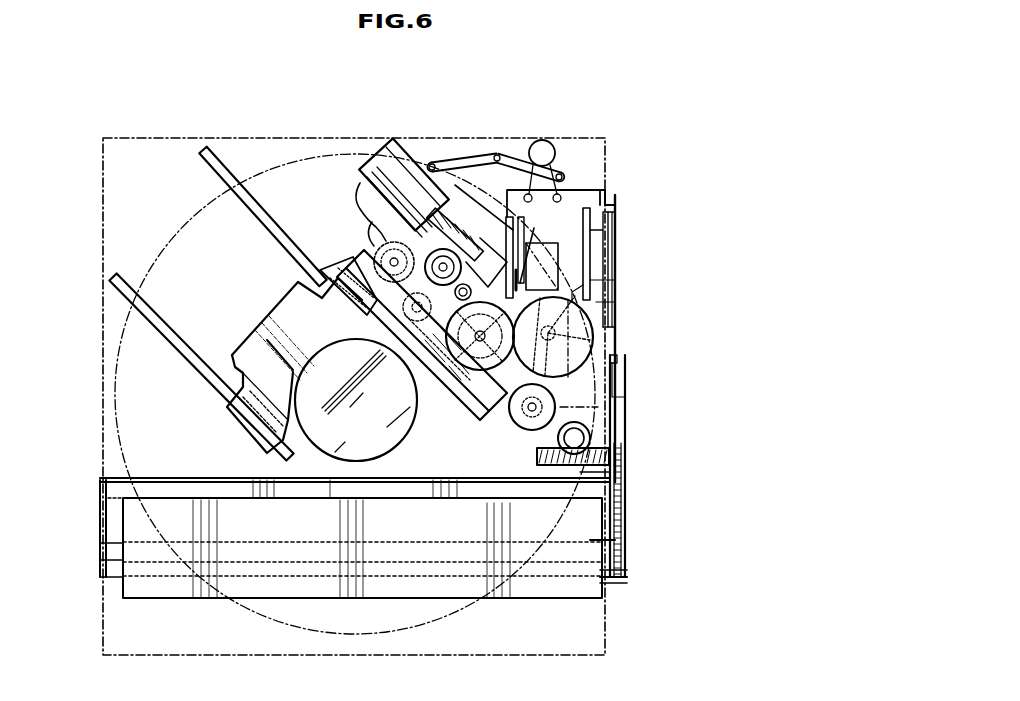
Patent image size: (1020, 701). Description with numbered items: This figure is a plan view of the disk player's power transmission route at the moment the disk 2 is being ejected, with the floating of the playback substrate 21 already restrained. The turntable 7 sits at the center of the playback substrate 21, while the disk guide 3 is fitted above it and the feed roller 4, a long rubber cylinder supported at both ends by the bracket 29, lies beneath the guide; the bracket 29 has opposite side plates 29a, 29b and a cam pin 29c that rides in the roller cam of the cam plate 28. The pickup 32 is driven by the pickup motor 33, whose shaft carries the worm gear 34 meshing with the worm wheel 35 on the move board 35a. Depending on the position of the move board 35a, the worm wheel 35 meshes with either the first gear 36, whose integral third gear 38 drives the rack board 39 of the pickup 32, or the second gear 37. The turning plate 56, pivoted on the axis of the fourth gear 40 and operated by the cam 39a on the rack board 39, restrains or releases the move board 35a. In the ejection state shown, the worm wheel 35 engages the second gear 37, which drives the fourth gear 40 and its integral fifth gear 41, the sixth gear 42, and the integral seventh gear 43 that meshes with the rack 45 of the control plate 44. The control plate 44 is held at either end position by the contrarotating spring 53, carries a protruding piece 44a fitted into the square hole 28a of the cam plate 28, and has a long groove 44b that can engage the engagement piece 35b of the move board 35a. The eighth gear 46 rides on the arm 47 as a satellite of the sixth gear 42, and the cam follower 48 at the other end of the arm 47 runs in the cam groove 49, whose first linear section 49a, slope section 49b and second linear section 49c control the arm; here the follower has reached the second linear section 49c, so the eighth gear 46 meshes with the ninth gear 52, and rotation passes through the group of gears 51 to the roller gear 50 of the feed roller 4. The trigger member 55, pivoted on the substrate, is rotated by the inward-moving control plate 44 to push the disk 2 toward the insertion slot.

The disk 2 is at (470, 606).
The disk guide 3 is at (574, 598).
The feed roller 4 is at (410, 542).
The turntable 7 is at (342, 487).
The playback substrate 21 is at (147, 658).
The cam plate 28 is at (626, 207).
The square hole 28a is at (615, 235).
The bracket 29 is at (628, 581).
The side plate 29a is at (627, 562).
The side plate 29b is at (100, 520).
The cam pin 29c is at (626, 358).
The pickup 32 is at (234, 426).
The pickup motor 33 is at (389, 140).
The worm gear 34 is at (462, 199).
The worm wheel 35 is at (448, 236).
The move board 35a is at (374, 201).
The engagement piece 35b is at (534, 240).
The first gear 36 is at (367, 226).
The second gear 37 is at (470, 288).
The third gear 38 is at (376, 249).
The rack board 39 is at (370, 274).
The cam 39a is at (342, 307).
The fourth gear 40 is at (448, 387).
The fifth gear 41 is at (460, 416).
The sixth gear 42 is at (483, 402).
The seventh gear 43 is at (616, 336).
The control plate 44 is at (604, 191).
The protruding piece 44a is at (617, 212).
The long groove 44b is at (516, 248).
The rack 45 is at (626, 372).
The eighth gear 46 is at (513, 424).
The arm 47 is at (600, 407).
The cam follower 48 is at (600, 234).
The cam groove 49 is at (688, 262).
The first linear section 49a is at (619, 253).
The slope section 49b is at (607, 284).
The second linear section 49c is at (619, 294).
The roller gear 50 is at (620, 539).
The group of gears 51 is at (638, 489).
The ninth gear 52 is at (600, 430).
The contrarotating spring 53 is at (557, 154).
The trigger member 55 is at (477, 142).
The turning plate 56 is at (400, 350).